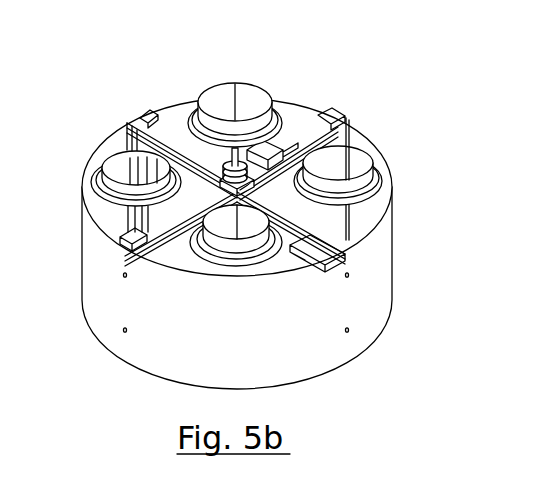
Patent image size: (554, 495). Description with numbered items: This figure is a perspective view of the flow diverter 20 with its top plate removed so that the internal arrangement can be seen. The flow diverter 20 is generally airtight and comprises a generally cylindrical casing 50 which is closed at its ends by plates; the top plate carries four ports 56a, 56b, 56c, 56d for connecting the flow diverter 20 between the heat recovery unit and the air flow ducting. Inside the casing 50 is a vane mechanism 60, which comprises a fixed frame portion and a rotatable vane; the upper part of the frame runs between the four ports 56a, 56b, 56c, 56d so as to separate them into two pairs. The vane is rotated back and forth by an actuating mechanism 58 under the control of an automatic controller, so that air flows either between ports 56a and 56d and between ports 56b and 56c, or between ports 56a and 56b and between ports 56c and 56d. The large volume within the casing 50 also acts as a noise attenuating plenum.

The flow diverter 20 is at (362, 355).
The cylindrical casing 50 is at (203, 313).
The port 56a is at (120, 157).
The port 56b is at (248, 97).
The port 56c is at (187, 246).
The port 56d is at (350, 154).
The actuating mechanism 58 is at (280, 116).
The vane mechanism 60 is at (290, 252).